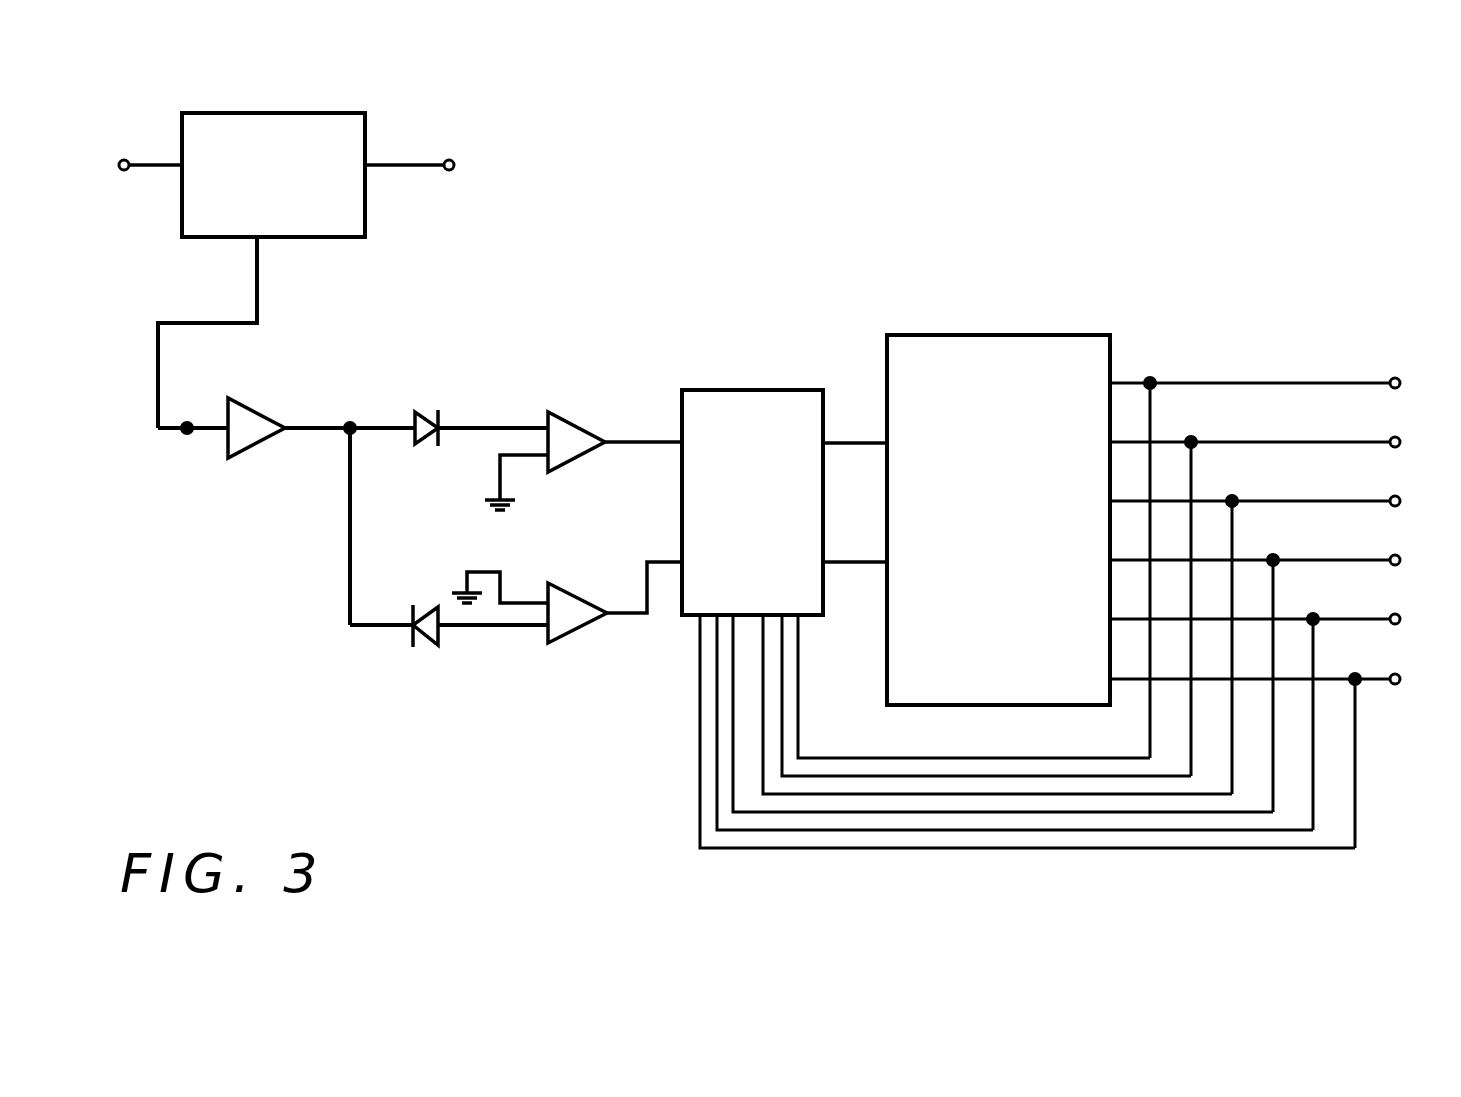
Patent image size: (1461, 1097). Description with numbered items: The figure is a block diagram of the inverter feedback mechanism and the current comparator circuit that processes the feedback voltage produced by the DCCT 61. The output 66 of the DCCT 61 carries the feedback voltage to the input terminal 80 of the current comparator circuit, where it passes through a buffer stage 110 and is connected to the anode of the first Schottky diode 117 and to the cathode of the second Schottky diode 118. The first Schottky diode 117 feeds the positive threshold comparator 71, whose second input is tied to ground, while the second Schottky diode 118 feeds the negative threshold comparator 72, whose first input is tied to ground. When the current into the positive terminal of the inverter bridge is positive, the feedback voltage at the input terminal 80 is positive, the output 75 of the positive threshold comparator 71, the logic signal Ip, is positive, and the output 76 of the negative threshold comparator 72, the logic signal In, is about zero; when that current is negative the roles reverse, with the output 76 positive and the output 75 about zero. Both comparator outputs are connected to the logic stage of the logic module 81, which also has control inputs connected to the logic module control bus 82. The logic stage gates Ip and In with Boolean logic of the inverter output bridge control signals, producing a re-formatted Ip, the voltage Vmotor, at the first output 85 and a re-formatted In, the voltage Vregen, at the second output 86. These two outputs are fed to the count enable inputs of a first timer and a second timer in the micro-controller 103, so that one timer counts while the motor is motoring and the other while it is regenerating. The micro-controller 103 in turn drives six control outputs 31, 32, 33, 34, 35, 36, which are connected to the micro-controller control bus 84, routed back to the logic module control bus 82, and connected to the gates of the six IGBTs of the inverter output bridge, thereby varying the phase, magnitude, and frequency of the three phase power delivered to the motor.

The DCCT 61 is at (280, 138).
The output of the DCCT 66 is at (257, 282).
The input terminal of the current comparator circuit 80 is at (187, 440).
The buffer amplifier 110 is at (243, 430).
The first Schottky diode 117 is at (430, 400).
The second Schottky diode 118 is at (425, 650).
The positive threshold comparator 71 is at (565, 443).
The negative threshold comparator 72 is at (565, 615).
The output of the positive threshold comparator 75 is at (640, 445).
The output of the negative threshold comparator 76 is at (648, 590).
The logic module 81 is at (738, 415).
The first output of the logic module 85 is at (862, 440).
The second output of the logic module 86 is at (857, 565).
The micro-controller 103 is at (1008, 388).
The micro-controller control bus 84 is at (1125, 472).
The logic module control bus 82 is at (750, 680).
The control output 31 is at (1422, 383).
The control output 32 is at (1422, 560).
The control output 33 is at (1422, 442).
The control output 34 is at (1422, 619).
The control output 35 is at (1422, 501).
The control output 36 is at (1422, 679).